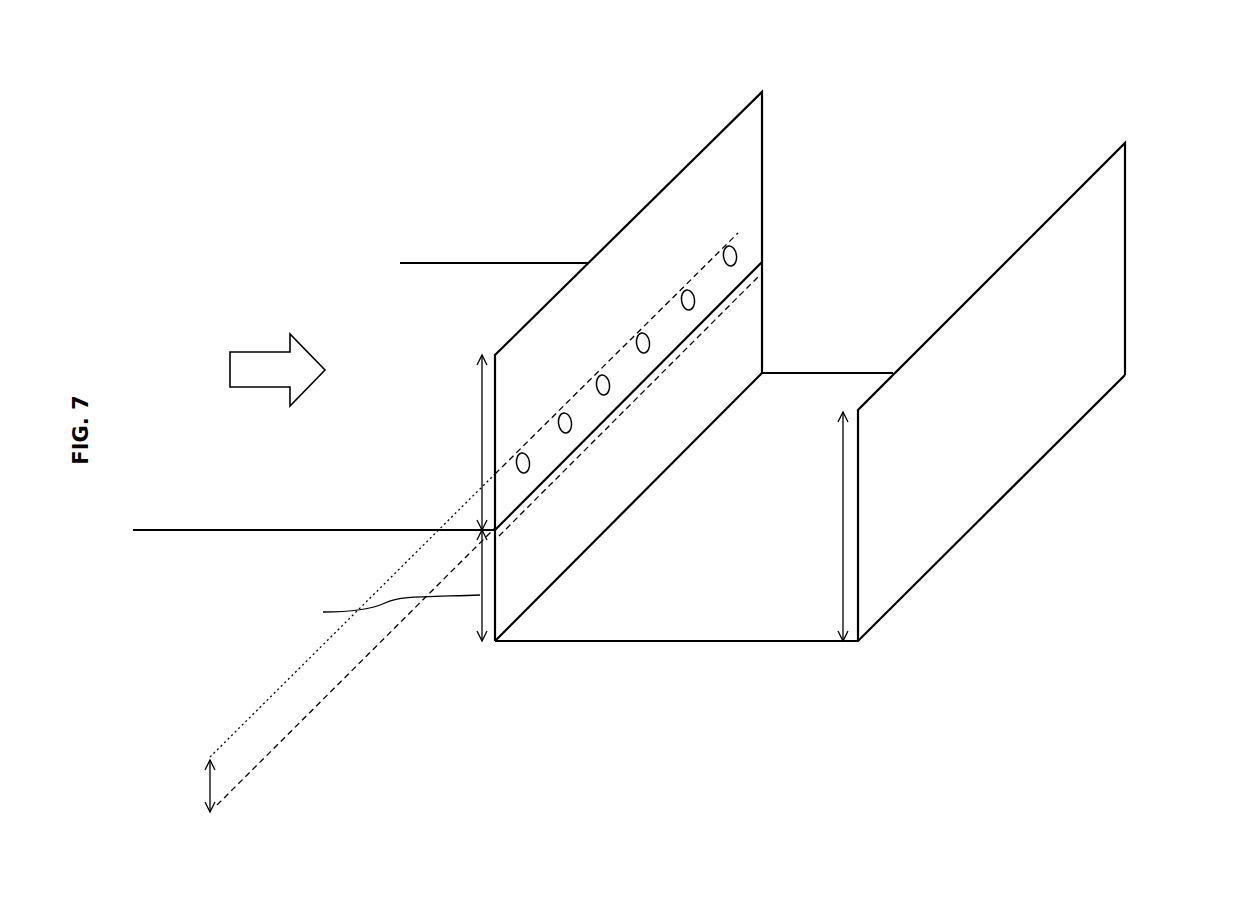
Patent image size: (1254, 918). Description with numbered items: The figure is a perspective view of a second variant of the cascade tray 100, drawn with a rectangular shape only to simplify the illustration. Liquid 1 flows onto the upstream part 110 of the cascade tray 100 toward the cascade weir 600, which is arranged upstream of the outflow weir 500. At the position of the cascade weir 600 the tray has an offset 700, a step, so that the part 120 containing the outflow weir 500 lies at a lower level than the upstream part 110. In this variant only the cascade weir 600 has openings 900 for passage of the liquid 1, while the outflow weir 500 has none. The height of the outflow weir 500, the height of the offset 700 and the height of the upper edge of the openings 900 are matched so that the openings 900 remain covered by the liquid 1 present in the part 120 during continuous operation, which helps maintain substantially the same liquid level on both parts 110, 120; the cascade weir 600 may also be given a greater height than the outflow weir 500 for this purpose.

The liquid 1 is at (255, 367).
The cascade tray 100 is at (427, 167).
The upstream part of the cascade tray 110 is at (360, 396).
The part containing the outflow weir 120 is at (810, 507).
The outflow weir 500 is at (1125, 247).
The cascade weir 600 is at (762, 183).
The offset 700 is at (497, 552).
The openings 900 is at (745, 256).